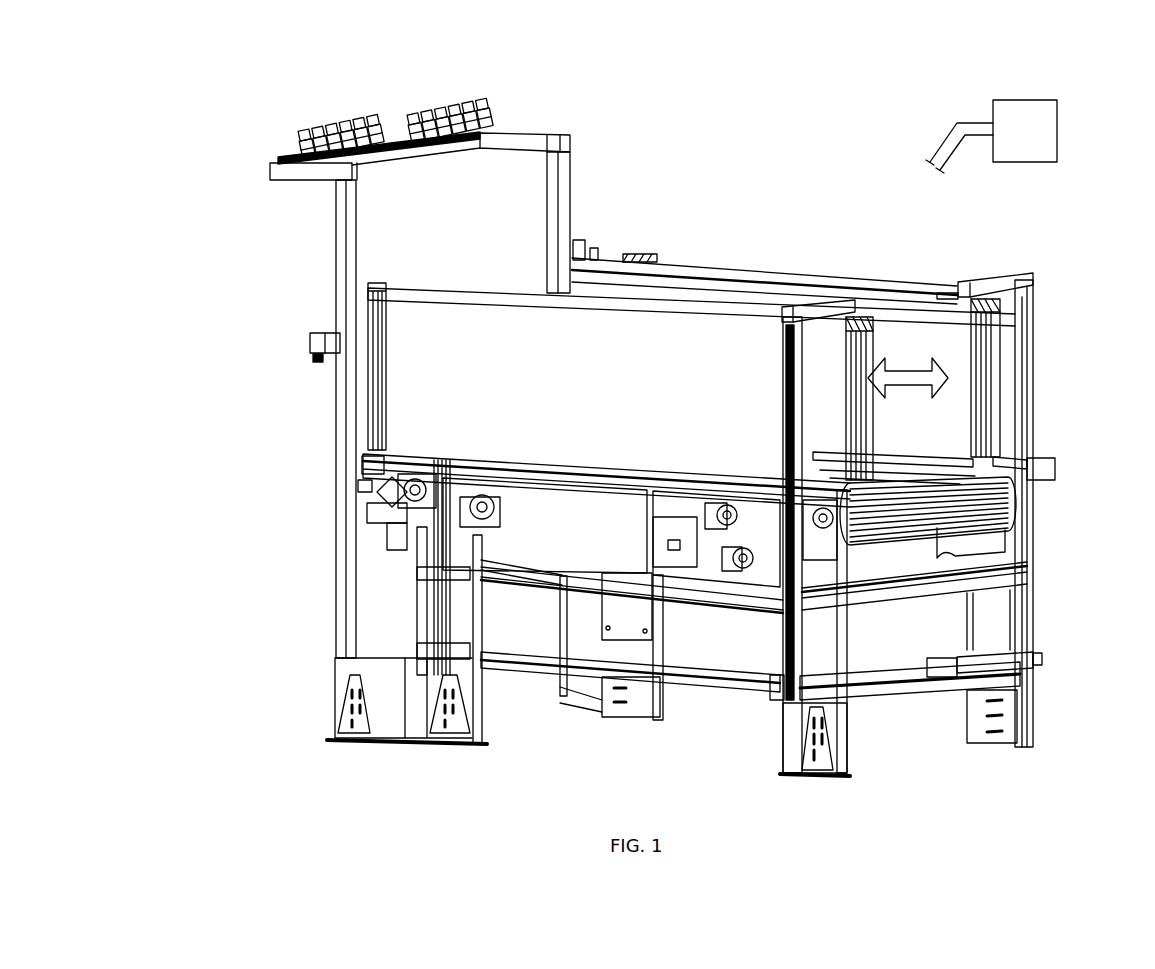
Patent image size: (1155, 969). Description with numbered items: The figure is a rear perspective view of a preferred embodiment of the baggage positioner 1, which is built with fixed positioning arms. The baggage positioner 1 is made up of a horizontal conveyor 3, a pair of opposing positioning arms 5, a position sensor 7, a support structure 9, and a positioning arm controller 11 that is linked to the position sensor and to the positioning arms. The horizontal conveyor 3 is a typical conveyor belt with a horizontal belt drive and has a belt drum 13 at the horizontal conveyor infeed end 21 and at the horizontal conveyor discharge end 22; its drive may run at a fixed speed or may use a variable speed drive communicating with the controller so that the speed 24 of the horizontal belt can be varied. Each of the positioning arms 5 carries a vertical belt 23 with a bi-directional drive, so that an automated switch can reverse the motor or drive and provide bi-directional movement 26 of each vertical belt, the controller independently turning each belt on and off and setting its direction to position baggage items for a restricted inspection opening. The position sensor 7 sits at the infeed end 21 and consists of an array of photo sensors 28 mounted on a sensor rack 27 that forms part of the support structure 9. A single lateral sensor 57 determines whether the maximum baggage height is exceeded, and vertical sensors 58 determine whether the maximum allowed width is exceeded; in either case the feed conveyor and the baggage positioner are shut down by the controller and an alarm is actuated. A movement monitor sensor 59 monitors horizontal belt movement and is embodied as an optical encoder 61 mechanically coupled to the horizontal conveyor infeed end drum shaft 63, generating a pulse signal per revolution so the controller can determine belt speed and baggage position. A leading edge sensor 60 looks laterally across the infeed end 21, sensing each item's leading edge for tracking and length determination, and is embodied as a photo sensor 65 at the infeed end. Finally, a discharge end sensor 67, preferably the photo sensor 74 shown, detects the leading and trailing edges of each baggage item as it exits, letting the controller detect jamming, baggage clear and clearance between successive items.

The baggage positioner 1 is at (585, 450).
The horizontal conveyor 3 is at (947, 457).
The positioning arms 5 is at (673, 300).
The position sensor 7 is at (300, 133).
The support structure 9 is at (1027, 603).
The positioning arm controller 11 is at (1060, 123).
The belt drum 13 is at (1020, 518).
The horizontal conveyor infeed end 21 is at (373, 450).
The horizontal conveyor discharge end 22 is at (1027, 453).
The vertical belt 23 is at (945, 324).
The speed of the horizontal belt 24 is at (913, 457).
The bi-directional movement 26 is at (915, 358).
The sensor rack 27 is at (337, 300).
The photo sensors 28 is at (353, 125).
The lateral sensor 57 is at (310, 352).
The vertical sensors 58 is at (433, 113).
The movement monitor sensor 59 is at (363, 485).
The leading edge sensor 60 is at (358, 468).
The optical encoder 61 is at (380, 502).
The horizontal conveyor infeed end drum shaft 63 is at (380, 515).
The photo sensor 65 is at (362, 477).
The discharge end sensor 67 is at (784, 445).
The photo sensor 74 is at (784, 460).